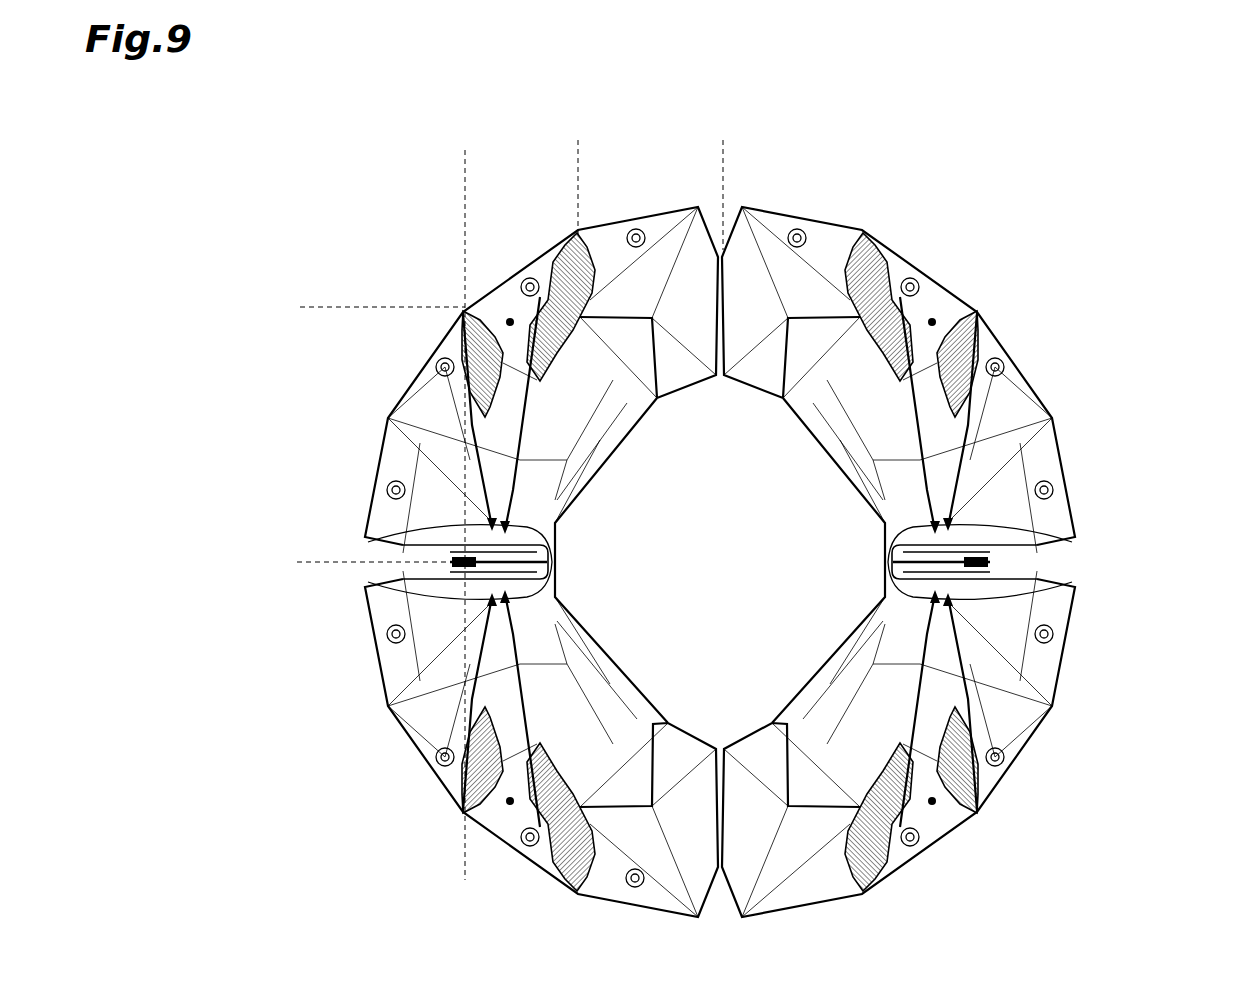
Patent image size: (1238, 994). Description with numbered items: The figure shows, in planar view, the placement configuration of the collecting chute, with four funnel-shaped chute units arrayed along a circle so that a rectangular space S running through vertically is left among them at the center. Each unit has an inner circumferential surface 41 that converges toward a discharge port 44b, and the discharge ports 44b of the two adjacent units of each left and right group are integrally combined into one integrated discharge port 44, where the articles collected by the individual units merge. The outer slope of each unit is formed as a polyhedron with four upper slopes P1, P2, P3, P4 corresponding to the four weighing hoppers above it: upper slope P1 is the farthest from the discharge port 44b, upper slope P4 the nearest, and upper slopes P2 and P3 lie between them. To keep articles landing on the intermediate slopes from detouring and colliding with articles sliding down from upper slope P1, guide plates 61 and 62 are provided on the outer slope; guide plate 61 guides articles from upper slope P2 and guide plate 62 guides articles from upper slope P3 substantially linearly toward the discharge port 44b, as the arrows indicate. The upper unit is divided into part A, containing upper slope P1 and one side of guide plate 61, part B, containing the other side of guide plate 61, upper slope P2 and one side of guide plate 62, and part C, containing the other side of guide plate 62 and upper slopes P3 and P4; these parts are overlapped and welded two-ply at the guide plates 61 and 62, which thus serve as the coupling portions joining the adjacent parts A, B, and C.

The inner circumferential surface 41 is at (505, 321).
The integrated discharge port 44 is at (242, 565).
The discharge port 44b is at (482, 540).
The guide plate 61 is at (565, 290).
The guide plate 62 is at (477, 332).
The upper slope P1 is at (633, 228).
The upper slope P2 is at (523, 281).
The upper slope P3 is at (436, 364).
The upper slope P4 is at (387, 490).
The part A is at (723, 147).
The part B is at (578, 157).
The part C is at (295, 310).
The space S is at (732, 571).